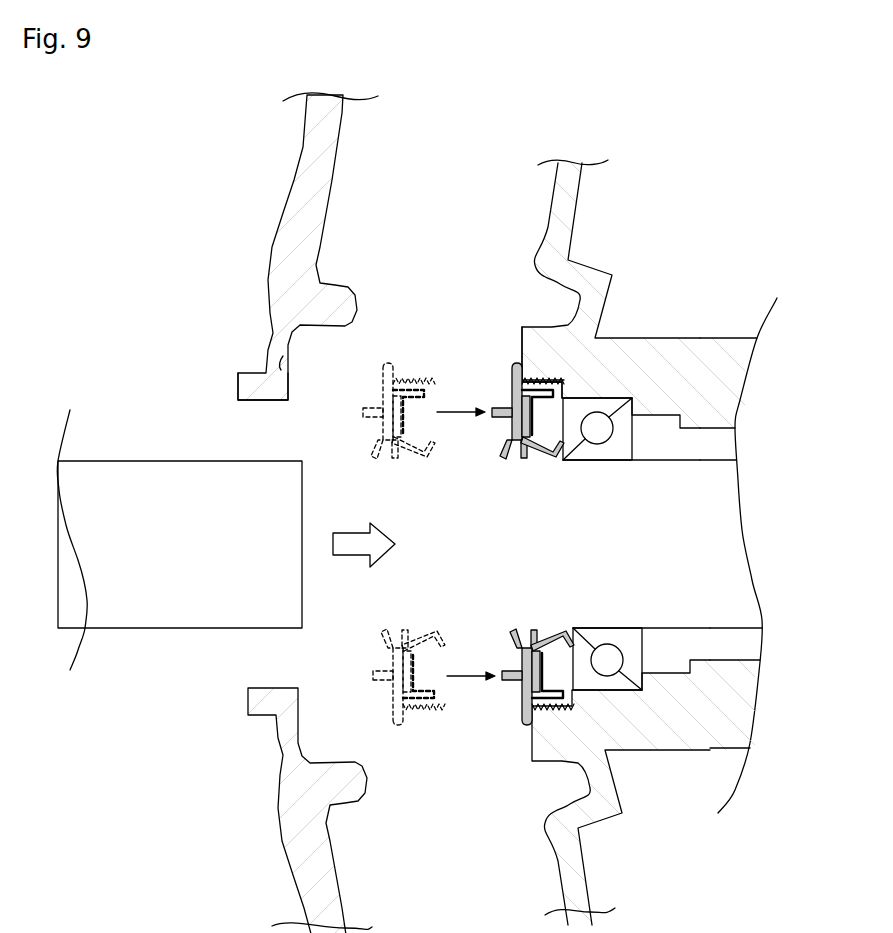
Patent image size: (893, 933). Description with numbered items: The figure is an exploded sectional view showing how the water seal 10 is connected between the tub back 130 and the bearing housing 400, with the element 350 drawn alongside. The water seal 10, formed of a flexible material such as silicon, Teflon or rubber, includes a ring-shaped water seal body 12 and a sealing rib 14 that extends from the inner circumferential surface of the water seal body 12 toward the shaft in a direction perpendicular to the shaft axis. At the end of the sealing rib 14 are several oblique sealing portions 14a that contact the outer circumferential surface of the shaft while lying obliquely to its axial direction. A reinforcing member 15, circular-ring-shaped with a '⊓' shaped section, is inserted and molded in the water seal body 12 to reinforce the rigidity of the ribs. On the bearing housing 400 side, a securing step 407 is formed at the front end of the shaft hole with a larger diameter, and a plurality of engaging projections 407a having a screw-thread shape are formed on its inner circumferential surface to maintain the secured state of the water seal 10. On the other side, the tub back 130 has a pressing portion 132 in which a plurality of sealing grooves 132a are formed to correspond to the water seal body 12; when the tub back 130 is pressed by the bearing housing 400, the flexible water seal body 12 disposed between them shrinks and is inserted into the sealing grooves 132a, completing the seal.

The water seal 10 is at (526, 410).
The water seal body 12 is at (513, 380).
The sealing rib 14 is at (513, 433).
The oblique sealing portion 14a is at (528, 460).
The reinforcing member 15 is at (532, 417).
The tub back 130 is at (268, 226).
The pressing portion 132 is at (288, 360).
The sealing grooves 132a is at (276, 364).
The door panel 350 is at (173, 458).
The bearing housing 400 is at (718, 338).
The securing step 407 is at (562, 392).
The engaging projections 407a is at (545, 385).